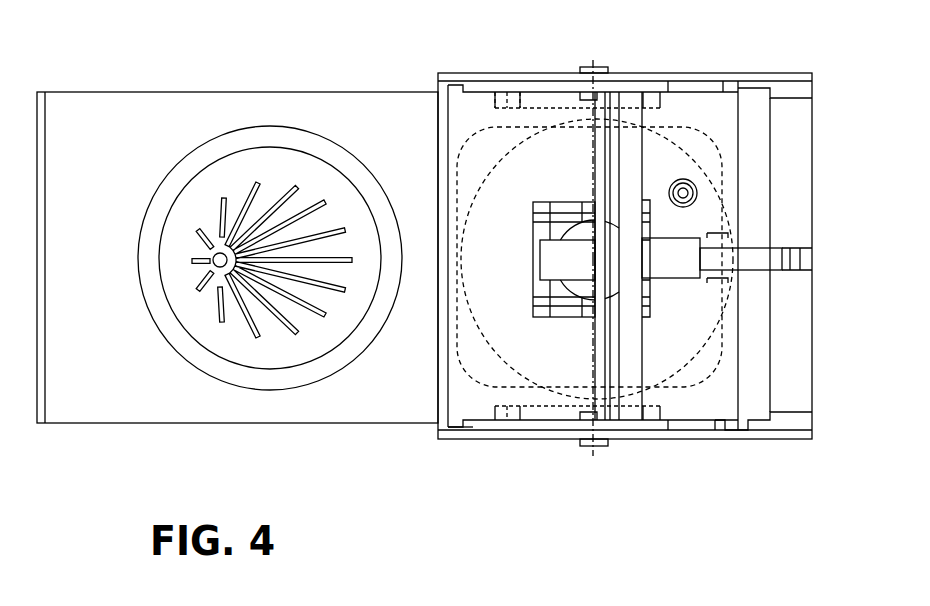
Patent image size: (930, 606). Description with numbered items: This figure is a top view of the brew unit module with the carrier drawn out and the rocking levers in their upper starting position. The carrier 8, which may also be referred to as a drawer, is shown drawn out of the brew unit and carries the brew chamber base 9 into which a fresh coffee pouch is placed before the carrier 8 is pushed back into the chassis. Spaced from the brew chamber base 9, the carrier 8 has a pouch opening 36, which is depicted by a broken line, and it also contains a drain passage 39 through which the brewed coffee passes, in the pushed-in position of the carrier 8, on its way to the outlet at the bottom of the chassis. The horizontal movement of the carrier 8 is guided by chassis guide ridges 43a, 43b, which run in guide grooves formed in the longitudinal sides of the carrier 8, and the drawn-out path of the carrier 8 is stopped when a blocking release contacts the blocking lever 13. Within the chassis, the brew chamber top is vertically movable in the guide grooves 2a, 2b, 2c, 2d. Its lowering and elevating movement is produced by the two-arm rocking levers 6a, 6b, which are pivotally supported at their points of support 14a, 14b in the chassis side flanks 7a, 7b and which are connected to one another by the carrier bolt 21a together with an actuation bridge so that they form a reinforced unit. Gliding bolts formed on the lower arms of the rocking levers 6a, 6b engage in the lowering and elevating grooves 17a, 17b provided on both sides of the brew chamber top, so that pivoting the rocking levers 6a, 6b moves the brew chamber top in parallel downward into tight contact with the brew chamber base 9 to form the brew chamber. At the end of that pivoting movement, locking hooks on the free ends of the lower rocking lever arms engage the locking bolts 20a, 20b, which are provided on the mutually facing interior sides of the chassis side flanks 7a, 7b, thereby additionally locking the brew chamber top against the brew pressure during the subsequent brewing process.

The carrier 8 is at (221, 410).
The brew chamber base 9 is at (287, 382).
The drain passage 39 is at (216, 256).
The pouch opening 36 is at (478, 363).
The guide groove 2a is at (455, 430).
The guide groove 2b is at (735, 431).
The guide groove 2c is at (453, 72).
The guide groove 2d is at (730, 85).
The lowering and elevating groove 17a is at (520, 413).
The lowering and elevating groove 17b is at (517, 100).
The point of support 14a is at (592, 447).
The point of support 14b is at (583, 67).
The rocking lever 6a is at (652, 413).
The rocking lever 6b is at (652, 100).
The chassis side flank 7a is at (688, 432).
The chassis side flank 7b is at (668, 85).
The locking bolt 20a is at (683, 430).
The locking bolt 20b is at (680, 88).
The chassis guide ridge 43a is at (782, 430).
The chassis guide ridge 43b is at (789, 95).
The carrier bolt 21a is at (600, 372).
The blocking lever 13 is at (800, 262).